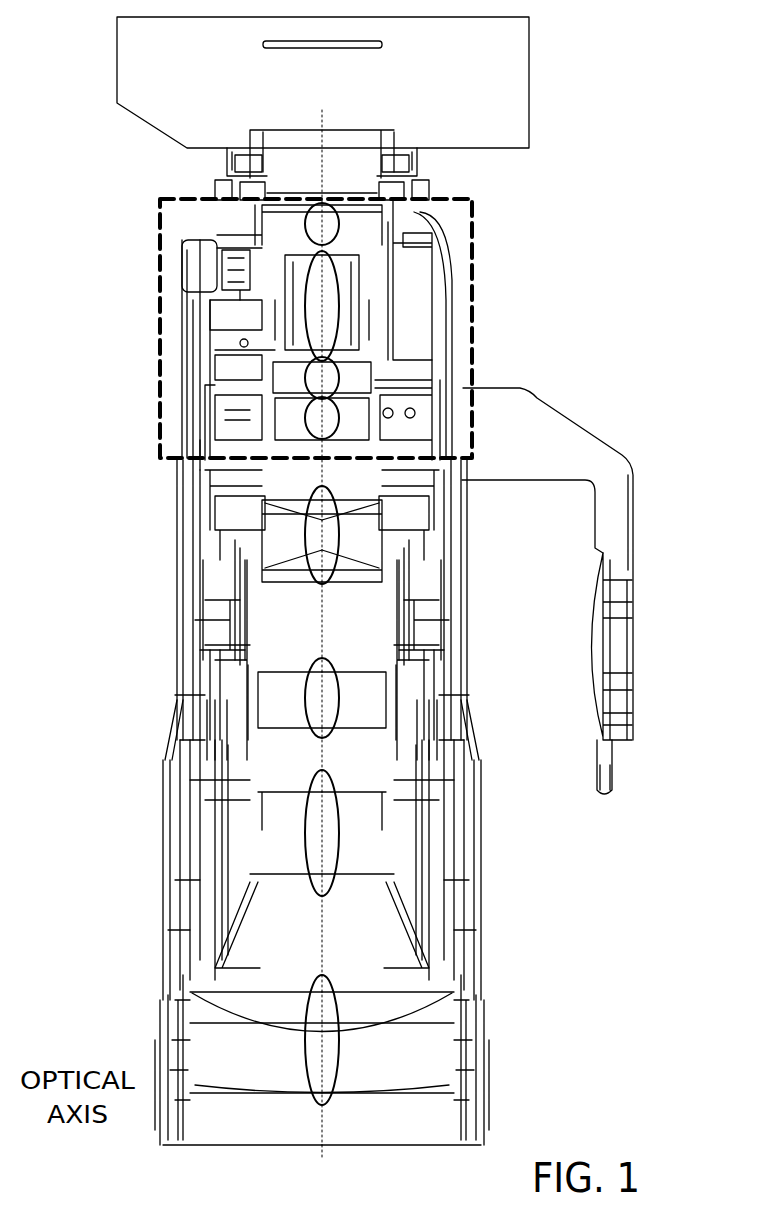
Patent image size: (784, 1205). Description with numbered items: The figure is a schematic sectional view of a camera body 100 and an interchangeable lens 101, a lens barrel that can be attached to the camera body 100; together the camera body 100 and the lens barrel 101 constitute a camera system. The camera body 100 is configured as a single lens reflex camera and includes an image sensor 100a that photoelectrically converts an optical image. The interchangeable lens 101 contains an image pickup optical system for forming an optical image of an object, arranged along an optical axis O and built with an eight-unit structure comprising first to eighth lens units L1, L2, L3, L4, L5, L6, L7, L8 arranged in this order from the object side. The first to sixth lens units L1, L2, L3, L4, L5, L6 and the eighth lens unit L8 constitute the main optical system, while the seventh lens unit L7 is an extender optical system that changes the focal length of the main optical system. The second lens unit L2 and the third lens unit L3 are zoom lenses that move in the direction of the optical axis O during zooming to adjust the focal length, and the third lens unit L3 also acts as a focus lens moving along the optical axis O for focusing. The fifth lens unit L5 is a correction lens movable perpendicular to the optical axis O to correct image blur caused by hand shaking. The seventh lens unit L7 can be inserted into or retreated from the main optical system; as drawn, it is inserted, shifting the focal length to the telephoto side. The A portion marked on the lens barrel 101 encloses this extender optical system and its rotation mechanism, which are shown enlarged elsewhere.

The camera body 100 is at (153, 116).
The image sensor 100a is at (383, 43).
The interchangeable lens 101 is at (663, 162).
The A portion A is at (473, 270).
The optical axis O is at (105, 1130).
The first lens unit L1 is at (303, 1037).
The second lens unit L2 is at (305, 812).
The third lens unit L3 is at (305, 692).
The fourth lens unit L4 is at (305, 528).
The fifth lens unit L5 is at (305, 420).
The sixth lens unit L6 is at (305, 378).
The seventh lens unit L7 is at (305, 296).
The eighth lens unit L8 is at (305, 236).